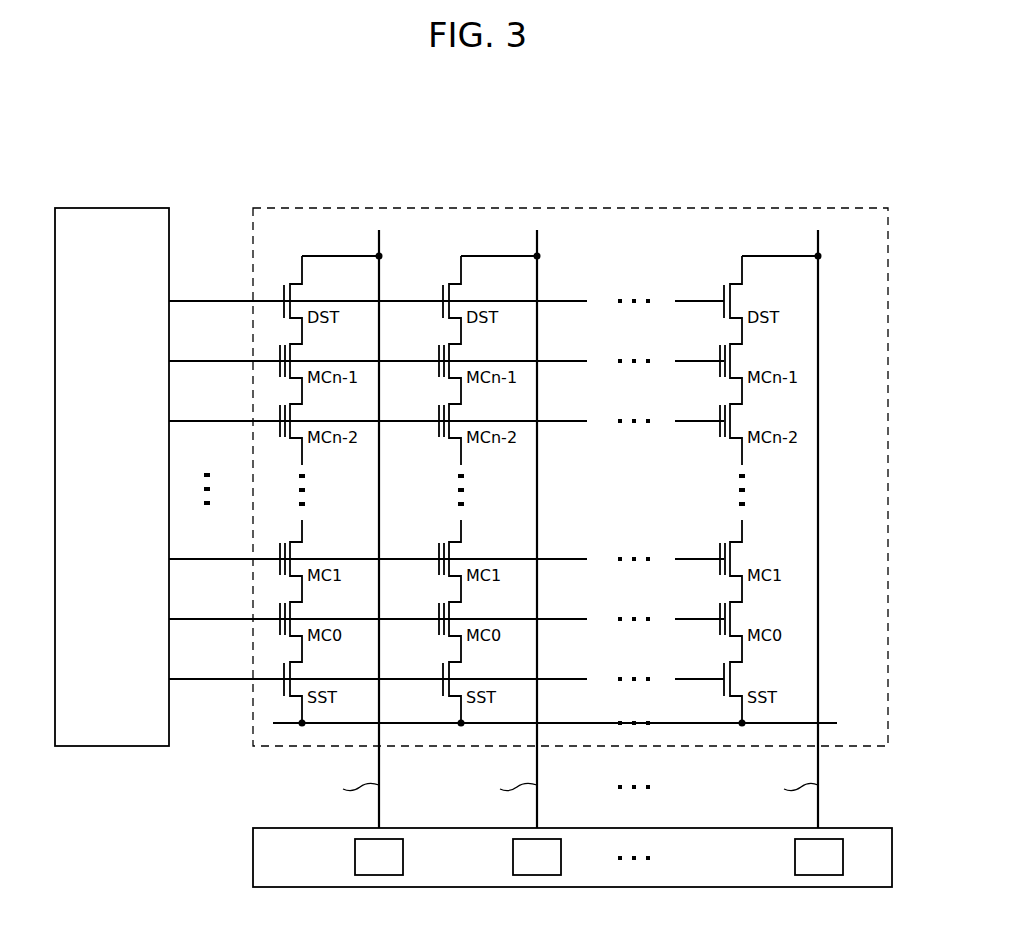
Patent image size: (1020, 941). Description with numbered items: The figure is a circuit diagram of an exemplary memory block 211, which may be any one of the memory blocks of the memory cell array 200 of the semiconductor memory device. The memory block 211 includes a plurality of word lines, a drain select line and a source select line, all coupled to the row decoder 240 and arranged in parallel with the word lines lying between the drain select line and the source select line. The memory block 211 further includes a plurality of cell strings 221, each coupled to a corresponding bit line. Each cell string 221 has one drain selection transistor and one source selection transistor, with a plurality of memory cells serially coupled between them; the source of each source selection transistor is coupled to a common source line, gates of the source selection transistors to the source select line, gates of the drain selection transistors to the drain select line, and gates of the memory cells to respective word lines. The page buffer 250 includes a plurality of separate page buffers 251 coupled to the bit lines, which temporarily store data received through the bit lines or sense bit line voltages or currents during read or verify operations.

The memory cell array 200 is at (863, 116).
The memory block 211 is at (781, 207).
The cell string 221 is at (291, 258).
The row decoder 240 is at (113, 207).
The page buffer 250 is at (252, 858).
The page buffer PB 251 is at (355, 858).